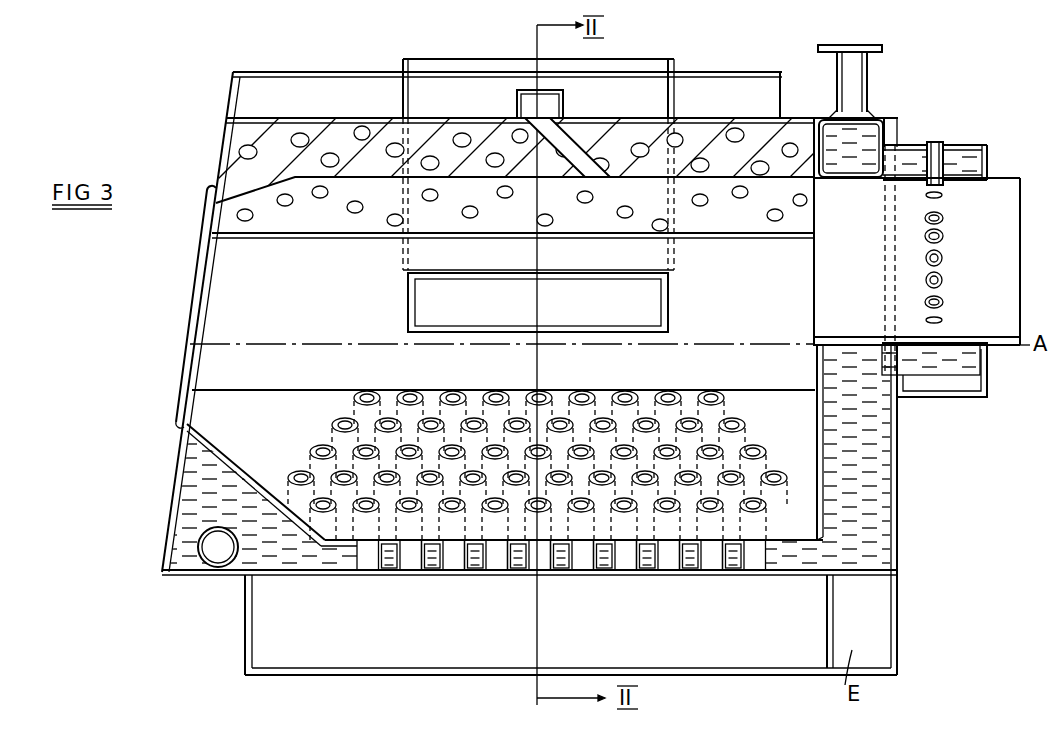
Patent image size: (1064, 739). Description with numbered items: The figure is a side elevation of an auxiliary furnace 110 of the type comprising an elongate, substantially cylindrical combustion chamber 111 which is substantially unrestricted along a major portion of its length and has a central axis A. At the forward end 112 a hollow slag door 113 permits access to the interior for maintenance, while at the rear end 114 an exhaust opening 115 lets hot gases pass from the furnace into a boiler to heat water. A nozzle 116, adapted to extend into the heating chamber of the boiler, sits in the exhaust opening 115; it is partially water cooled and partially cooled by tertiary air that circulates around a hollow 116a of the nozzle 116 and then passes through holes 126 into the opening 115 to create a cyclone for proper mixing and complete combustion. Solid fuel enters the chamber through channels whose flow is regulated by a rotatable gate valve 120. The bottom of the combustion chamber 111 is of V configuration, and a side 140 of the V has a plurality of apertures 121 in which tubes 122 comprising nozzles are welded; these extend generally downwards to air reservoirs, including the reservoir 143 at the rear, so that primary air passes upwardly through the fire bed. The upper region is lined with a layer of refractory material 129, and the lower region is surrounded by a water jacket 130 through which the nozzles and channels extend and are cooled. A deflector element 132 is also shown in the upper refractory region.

The furnace 110 is at (229, 67).
The forward end 112 is at (222, 128).
The hollow slag door 113 is at (180, 380).
The side of the V 140 is at (200, 426).
The combustion chamber 111 is at (502, 367).
The gate valve 120 is at (660, 322).
The apertures 121 is at (452, 452).
The tubes 122 is at (365, 391).
The deflector baffle 132 is at (583, 163).
The layer of refractory material 129 is at (784, 141).
The exhaust opening 115 is at (916, 258).
The holes 126 is at (937, 236).
The nozzle 116 is at (1014, 262).
The hollow of the nozzle 116a is at (964, 390).
The rear end 114 is at (898, 471).
The water jacket 130 is at (880, 528).
The air reservoir 143 is at (693, 645).